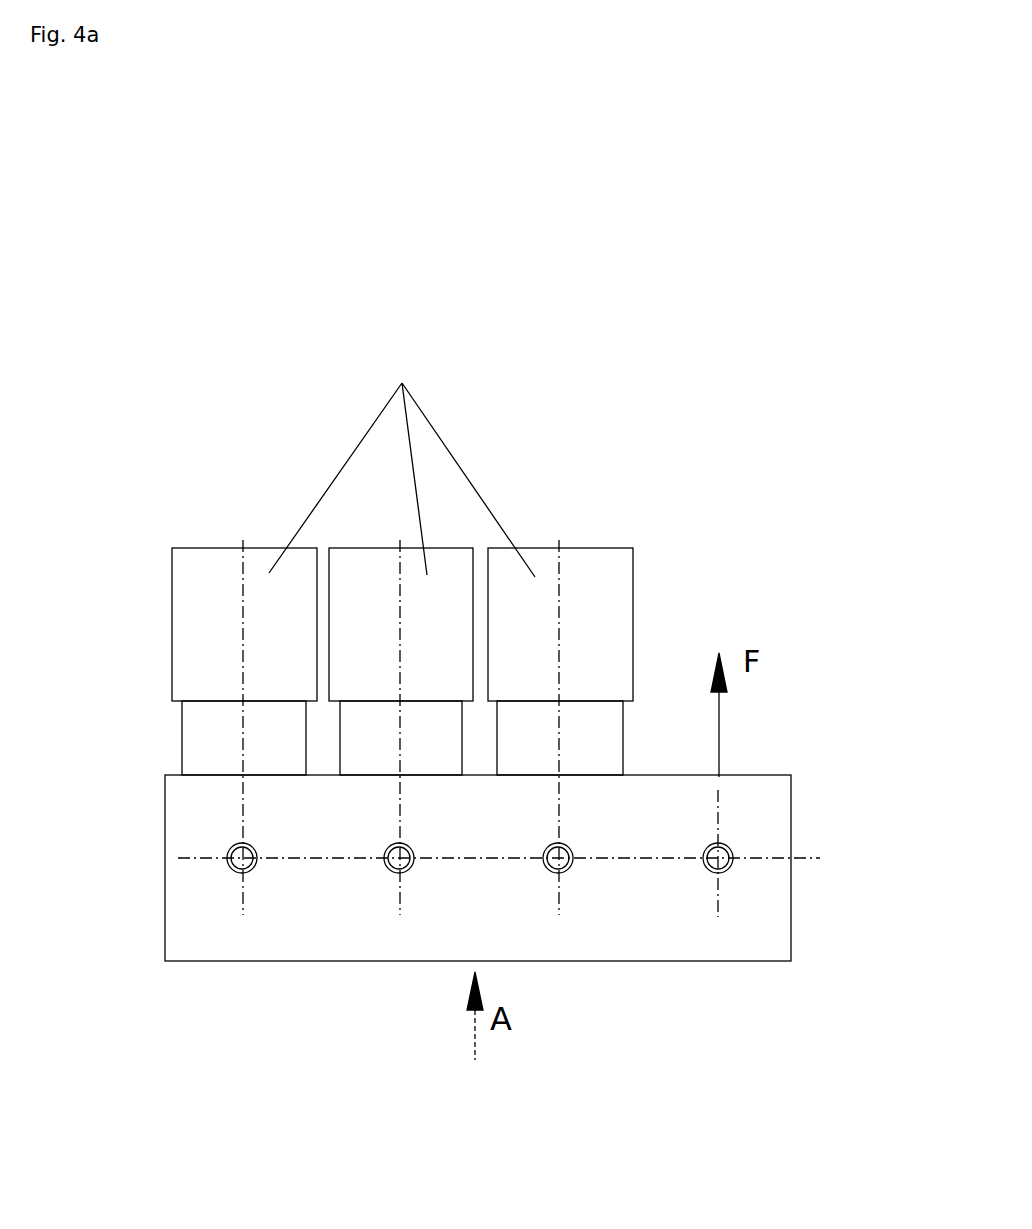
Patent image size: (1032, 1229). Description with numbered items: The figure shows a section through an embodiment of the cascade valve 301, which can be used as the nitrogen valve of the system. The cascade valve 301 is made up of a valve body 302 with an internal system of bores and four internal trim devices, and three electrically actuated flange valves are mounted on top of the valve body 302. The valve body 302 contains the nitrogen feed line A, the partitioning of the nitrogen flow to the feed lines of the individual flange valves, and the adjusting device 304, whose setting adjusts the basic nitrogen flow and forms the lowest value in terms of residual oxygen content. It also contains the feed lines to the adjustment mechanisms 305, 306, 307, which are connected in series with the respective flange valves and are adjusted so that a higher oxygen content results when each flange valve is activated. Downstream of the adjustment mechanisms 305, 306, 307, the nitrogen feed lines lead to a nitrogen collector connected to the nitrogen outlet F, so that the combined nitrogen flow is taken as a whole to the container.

The cascade valve 301 is at (917, 797).
The valve body 302 is at (202, 918).
The adjusting device 304 is at (705, 870).
The adjustment mechanism 305 is at (259, 890).
The adjustment mechanism 306 is at (416, 890).
The adjustment mechanism 307 is at (575, 888).